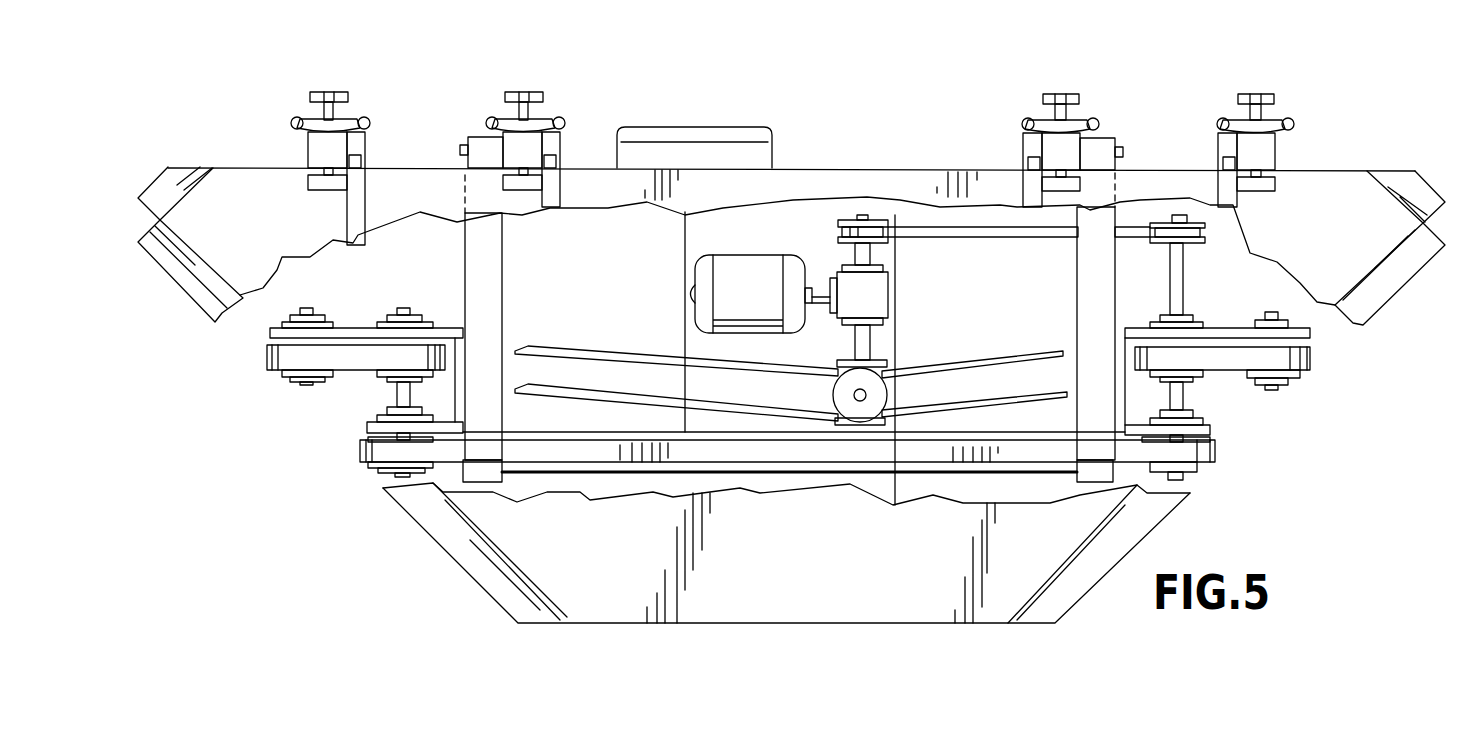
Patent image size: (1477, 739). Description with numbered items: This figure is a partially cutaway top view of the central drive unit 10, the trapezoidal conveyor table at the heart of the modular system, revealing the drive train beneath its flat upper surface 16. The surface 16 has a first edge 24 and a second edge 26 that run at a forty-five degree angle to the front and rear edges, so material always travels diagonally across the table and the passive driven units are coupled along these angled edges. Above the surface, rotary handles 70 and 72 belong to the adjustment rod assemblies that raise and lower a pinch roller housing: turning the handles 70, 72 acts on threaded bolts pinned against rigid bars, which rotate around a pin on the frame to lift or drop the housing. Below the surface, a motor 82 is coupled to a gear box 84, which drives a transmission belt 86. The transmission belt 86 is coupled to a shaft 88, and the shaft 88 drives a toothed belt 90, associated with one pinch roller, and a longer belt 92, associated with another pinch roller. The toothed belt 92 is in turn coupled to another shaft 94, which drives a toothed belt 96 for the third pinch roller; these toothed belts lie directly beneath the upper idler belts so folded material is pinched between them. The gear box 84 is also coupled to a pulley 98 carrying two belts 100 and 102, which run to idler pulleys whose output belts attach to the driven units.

The central drive unit 10 is at (840, 168).
The flat upper surface 16 is at (927, 602).
The first edge 24 is at (1400, 287).
The second edge 26 is at (192, 285).
The rotary handle 70 is at (538, 119).
The rotary handle 72 is at (1078, 131).
The motor 82 is at (748, 255).
The gear box 84 is at (876, 298).
The transmission belt 86 is at (1037, 240).
The shaft 88 is at (1183, 287).
The toothed belt 90 is at (1313, 360).
The longer belt 92 is at (1217, 453).
The shaft 94 is at (397, 395).
The toothed belt 96 is at (267, 353).
The pulley 98 is at (887, 395).
The belt 100 is at (1027, 357).
The belt 102 is at (600, 350).